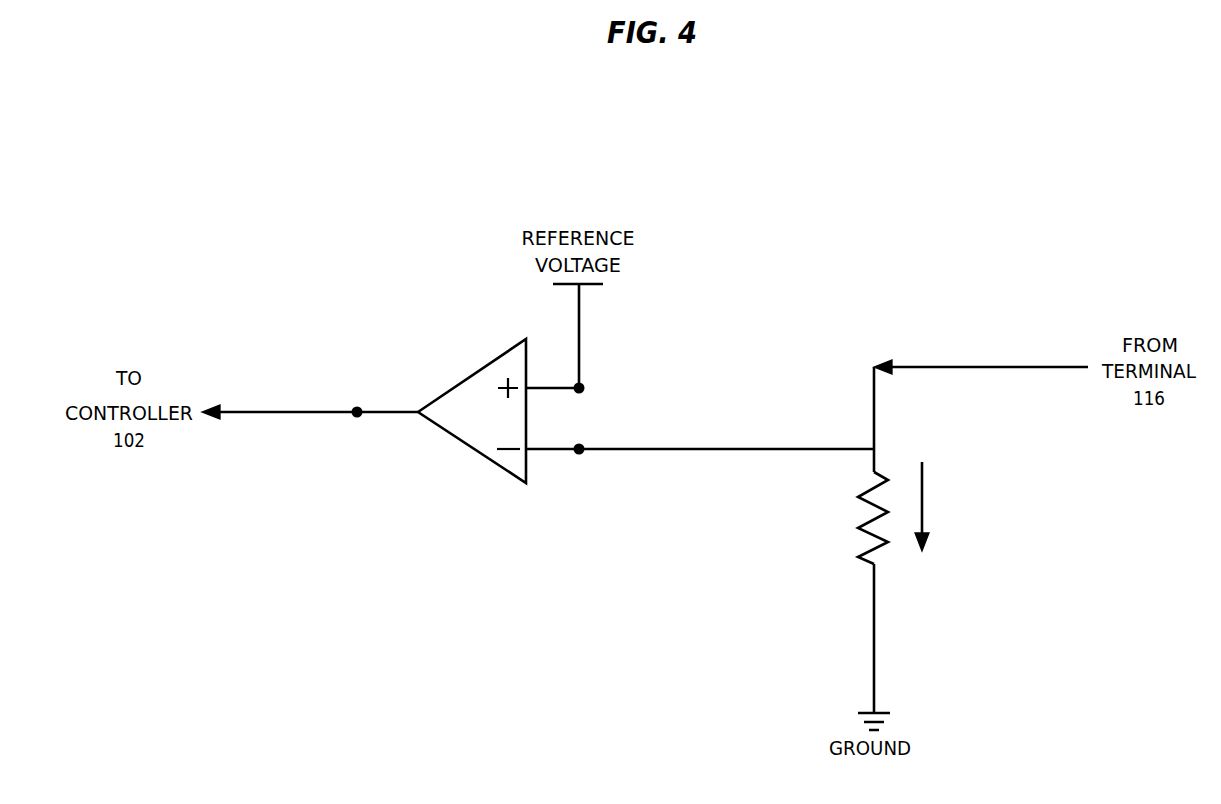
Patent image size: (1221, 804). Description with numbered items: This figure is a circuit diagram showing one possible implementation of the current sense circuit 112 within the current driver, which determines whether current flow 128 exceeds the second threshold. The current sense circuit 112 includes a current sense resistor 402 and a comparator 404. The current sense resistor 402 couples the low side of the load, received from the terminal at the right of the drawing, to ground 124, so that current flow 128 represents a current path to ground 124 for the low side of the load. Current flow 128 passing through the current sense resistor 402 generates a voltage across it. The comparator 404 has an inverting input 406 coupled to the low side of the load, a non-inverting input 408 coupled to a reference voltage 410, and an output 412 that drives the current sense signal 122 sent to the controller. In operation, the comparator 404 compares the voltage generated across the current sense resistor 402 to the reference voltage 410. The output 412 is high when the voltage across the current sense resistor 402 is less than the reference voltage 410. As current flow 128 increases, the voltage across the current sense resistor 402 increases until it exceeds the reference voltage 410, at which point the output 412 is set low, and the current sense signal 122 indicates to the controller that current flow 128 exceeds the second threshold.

The current sense circuit 112 is at (772, 133).
The comparator 404 is at (507, 477).
The reference voltage 410 is at (579, 310).
The non-inverting input 408 is at (563, 389).
The inverting input 406 is at (559, 450).
The output 412 is at (388, 413).
The current sense signal 122 is at (283, 413).
The current sense resistor 402 is at (866, 515).
The current flow 128 is at (923, 493).
The ground 124 is at (874, 630).